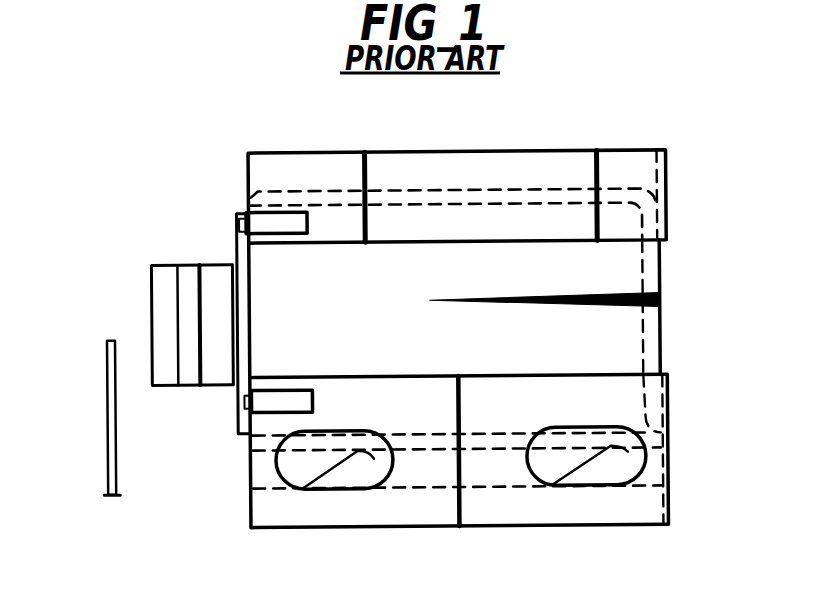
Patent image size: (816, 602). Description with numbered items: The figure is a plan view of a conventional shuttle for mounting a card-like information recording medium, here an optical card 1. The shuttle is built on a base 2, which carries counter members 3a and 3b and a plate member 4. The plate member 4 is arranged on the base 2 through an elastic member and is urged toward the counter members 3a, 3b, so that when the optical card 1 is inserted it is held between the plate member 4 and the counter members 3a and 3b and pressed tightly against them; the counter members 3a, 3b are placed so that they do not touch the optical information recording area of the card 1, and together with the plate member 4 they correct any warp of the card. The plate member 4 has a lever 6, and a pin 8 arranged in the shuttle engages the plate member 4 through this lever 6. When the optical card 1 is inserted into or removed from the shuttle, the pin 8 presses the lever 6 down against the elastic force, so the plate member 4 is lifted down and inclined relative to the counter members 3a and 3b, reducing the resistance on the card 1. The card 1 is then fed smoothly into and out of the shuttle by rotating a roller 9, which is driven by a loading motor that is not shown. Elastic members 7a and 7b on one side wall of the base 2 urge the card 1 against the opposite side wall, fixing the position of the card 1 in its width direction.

The optical card 1 is at (650, 327).
The base 2 is at (548, 151).
The counter member 3a is at (627, 222).
The counter member 3b is at (628, 400).
The plate member 4 is at (240, 366).
The lever 6 is at (187, 311).
The elastic member 7a is at (339, 469).
The elastic member 7b is at (584, 471).
The pin 8 is at (107, 360).
The roller 9 is at (248, 212).